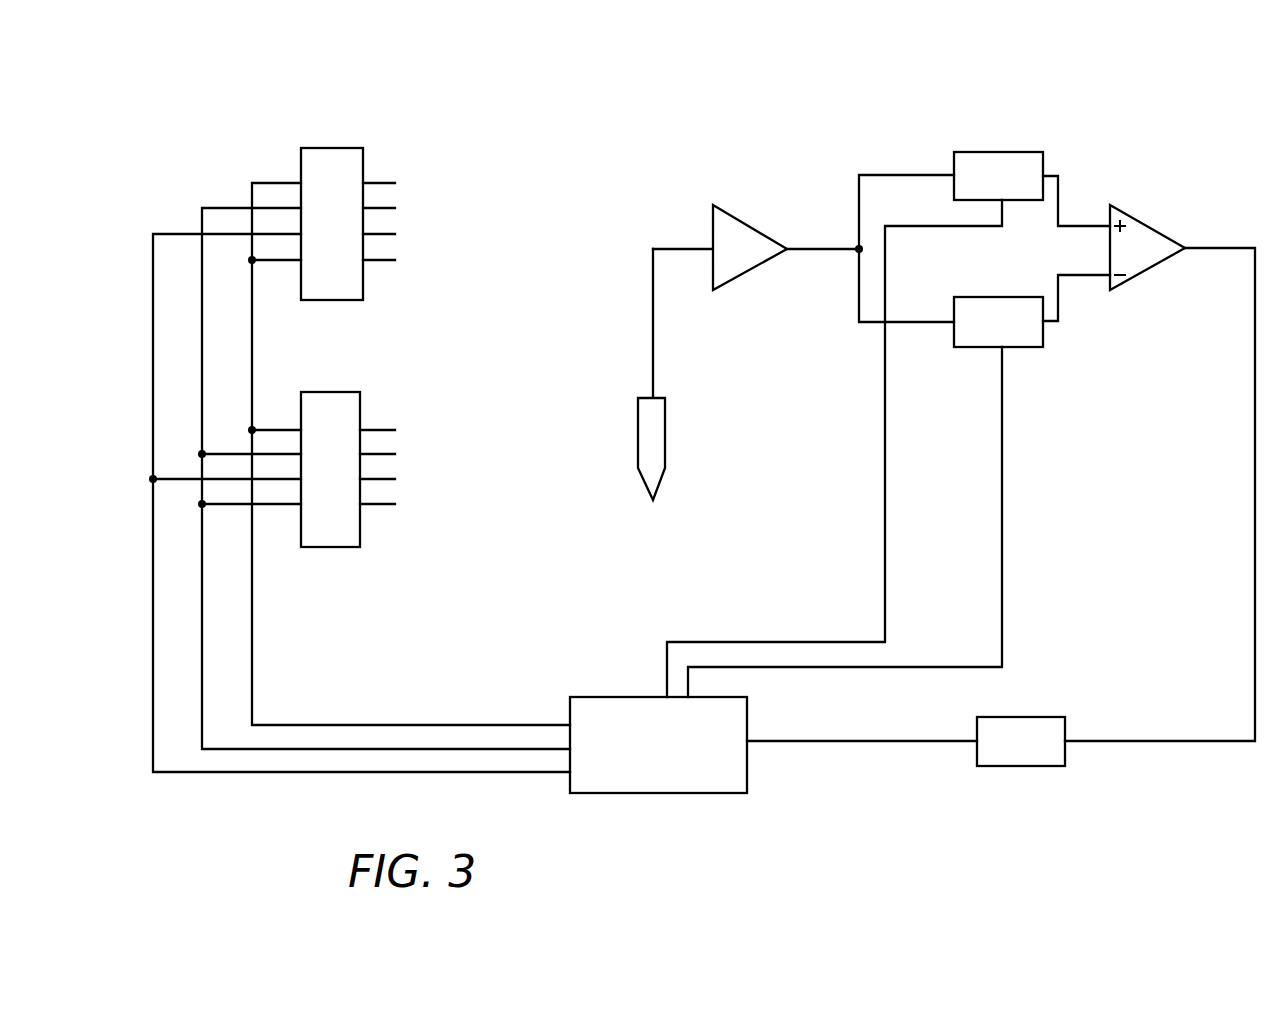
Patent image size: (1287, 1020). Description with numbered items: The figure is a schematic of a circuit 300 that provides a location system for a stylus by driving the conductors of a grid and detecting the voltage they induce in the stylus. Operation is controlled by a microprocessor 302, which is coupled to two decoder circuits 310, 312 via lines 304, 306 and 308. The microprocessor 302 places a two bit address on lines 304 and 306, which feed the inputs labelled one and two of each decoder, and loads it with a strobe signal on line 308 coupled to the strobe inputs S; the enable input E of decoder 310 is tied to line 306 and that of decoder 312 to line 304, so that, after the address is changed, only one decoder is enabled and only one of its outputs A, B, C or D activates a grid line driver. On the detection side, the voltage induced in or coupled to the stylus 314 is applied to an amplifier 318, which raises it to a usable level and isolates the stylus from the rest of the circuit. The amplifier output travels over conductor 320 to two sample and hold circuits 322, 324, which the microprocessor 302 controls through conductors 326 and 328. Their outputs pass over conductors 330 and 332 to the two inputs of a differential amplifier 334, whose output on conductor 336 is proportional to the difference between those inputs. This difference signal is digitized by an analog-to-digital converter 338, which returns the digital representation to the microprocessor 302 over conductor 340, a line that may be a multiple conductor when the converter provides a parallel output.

The circuit 300 is at (694, 60).
The microprocessor 302 is at (641, 663).
The line 304 is at (498, 724).
The line 306 is at (494, 749).
The line 308 is at (497, 772).
The decoder circuit 310 is at (350, 372).
The decoder circuit 312 is at (330, 147).
The stylus 314 is at (668, 422).
The amplifier 318 is at (798, 192).
The conductor 320 is at (842, 222).
The sample and hold circuit 322 is at (1026, 120).
The sample and hold circuit 324 is at (1005, 270).
The conductor 326 is at (927, 235).
The conductor 328 is at (1000, 378).
The conductor 330 is at (1058, 193).
The conductor 332 is at (1058, 294).
The differential amplifier 334 is at (1151, 270).
The conductor 336 is at (1252, 210).
The analog-to-digital converter 338 is at (1090, 687).
The conductor 340 is at (901, 716).